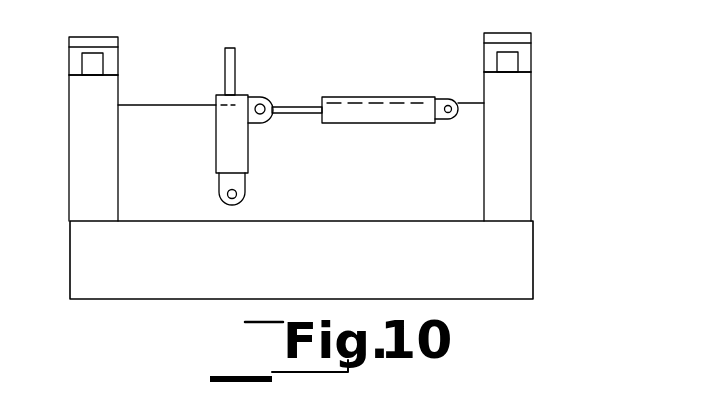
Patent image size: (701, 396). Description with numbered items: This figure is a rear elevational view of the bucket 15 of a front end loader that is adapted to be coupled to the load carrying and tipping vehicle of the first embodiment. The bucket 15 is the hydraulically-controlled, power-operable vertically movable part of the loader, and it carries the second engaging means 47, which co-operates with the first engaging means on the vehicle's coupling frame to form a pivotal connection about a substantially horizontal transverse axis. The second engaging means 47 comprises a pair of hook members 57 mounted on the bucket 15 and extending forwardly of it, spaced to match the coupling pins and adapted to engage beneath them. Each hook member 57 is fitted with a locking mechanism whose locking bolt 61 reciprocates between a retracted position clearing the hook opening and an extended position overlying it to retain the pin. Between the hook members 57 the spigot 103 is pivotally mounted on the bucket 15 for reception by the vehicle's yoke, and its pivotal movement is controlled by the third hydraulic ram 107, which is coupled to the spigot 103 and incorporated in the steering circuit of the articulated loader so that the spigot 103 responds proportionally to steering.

The bucket 15 is at (535, 182).
The second engaging means 47 is at (78, 34).
The hook member 57 is at (120, 65).
The locking bolt 61 is at (92, 63).
The spigot 103 is at (236, 68).
The third hydraulic ram 107 is at (353, 95).